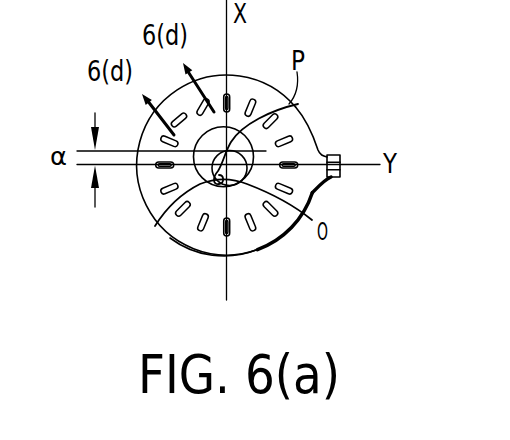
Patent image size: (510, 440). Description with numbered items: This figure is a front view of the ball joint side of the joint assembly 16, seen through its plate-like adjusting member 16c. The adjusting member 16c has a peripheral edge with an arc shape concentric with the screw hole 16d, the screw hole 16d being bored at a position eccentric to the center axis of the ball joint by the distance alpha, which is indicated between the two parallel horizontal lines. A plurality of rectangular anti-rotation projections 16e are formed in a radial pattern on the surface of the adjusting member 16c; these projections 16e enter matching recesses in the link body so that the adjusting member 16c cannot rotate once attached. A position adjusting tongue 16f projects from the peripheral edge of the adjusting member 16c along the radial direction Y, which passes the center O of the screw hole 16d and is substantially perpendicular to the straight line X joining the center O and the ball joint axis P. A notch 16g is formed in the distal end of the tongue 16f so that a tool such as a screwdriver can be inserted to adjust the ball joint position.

The joint assembly 16 is at (309, 107).
The adjusting member 16c is at (199, 252).
The screw hole 16d is at (155, 226).
The anti-rotation projections 16e is at (248, 221).
The position adjusting tongue 16f is at (341, 178).
The notch 16g is at (340, 158).